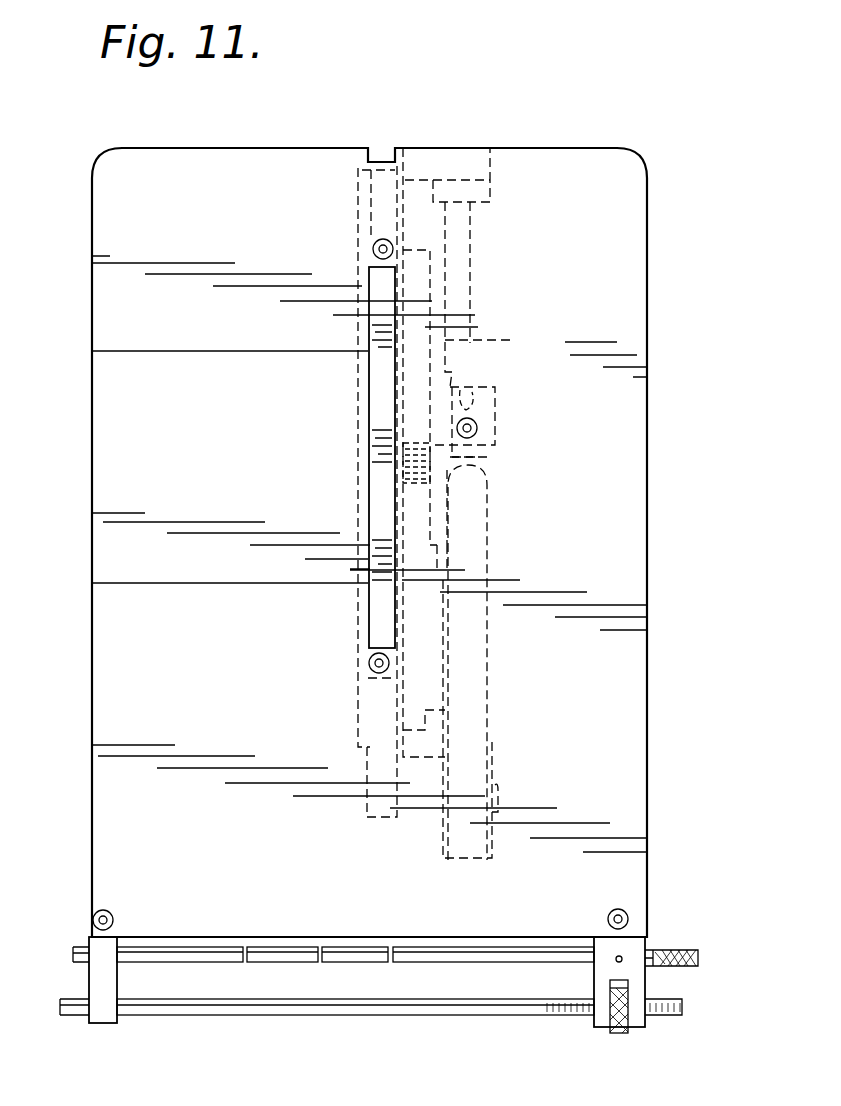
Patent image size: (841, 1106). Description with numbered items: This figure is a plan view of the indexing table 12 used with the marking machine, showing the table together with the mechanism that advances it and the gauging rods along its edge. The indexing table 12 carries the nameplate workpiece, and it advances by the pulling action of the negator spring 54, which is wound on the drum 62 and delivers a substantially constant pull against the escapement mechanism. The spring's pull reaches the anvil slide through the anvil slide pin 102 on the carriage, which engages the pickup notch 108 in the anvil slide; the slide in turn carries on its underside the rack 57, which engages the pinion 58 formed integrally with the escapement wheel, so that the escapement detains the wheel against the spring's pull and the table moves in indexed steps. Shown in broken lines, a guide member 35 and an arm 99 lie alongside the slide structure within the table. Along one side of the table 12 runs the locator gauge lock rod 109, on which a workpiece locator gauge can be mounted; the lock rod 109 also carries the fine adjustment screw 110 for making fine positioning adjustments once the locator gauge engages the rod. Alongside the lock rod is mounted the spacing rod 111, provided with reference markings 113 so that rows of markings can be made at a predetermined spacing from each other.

The indexing table 12 is at (627, 202).
The slide bar 35 is at (372, 603).
The rack 57 is at (420, 268).
The arm 99 is at (470, 278).
The anvil slide pin 102 is at (447, 340).
The pickup notch 108 is at (470, 390).
The pinion 58 is at (403, 458).
The negator spring 54 is at (478, 558).
The drum 62 is at (492, 752).
The spacing rod 111 is at (188, 955).
The reference markings 113 is at (318, 950).
The locator gauge lock rod 109 is at (372, 1010).
The fine adjustment screw 110 is at (618, 1032).